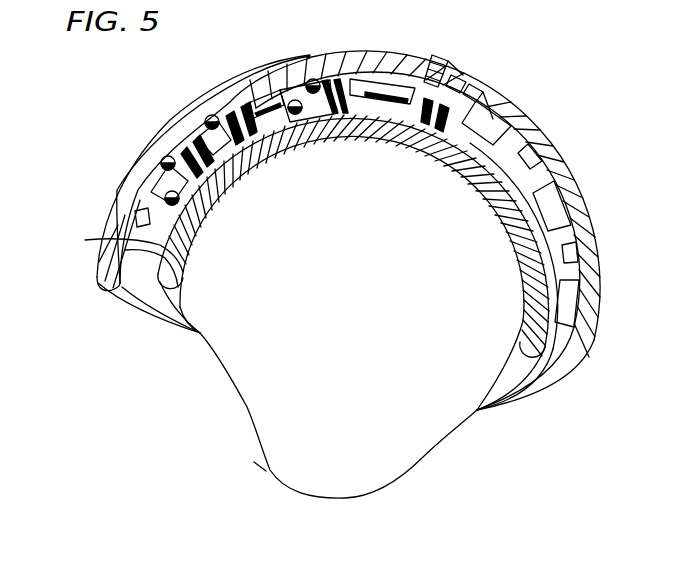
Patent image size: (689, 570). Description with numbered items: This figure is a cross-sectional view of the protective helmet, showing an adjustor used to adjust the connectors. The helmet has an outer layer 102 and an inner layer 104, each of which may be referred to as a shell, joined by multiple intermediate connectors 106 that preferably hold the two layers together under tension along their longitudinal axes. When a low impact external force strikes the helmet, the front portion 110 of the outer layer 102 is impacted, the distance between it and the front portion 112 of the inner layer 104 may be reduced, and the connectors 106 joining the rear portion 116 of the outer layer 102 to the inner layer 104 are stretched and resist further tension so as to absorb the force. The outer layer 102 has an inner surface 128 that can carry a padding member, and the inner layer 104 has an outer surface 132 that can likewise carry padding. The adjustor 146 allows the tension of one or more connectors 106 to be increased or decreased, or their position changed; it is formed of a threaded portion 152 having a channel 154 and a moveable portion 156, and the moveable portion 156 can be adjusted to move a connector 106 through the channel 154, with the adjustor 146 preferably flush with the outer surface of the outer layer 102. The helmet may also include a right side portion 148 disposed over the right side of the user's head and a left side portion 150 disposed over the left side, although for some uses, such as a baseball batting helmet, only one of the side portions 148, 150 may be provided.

The outer layer 102 is at (140, 148).
The inner layer 104 is at (224, 172).
The intermediate connectors 106 is at (197, 173).
The front portion of outer layer 110 is at (118, 308).
The front portion of inner layer 112 is at (201, 282).
The rear portion of outer layer 116 is at (596, 290).
The inner surface 128 is at (187, 271).
The outer surface 132 is at (85, 240).
The adjustor 146 is at (455, 72).
The right side portion 148 is at (371, 315).
The left side portion 150 is at (118, 128).
The threaded portion 152 is at (513, 96).
The channel 154 is at (475, 78).
The moveable portion 156 is at (436, 60).